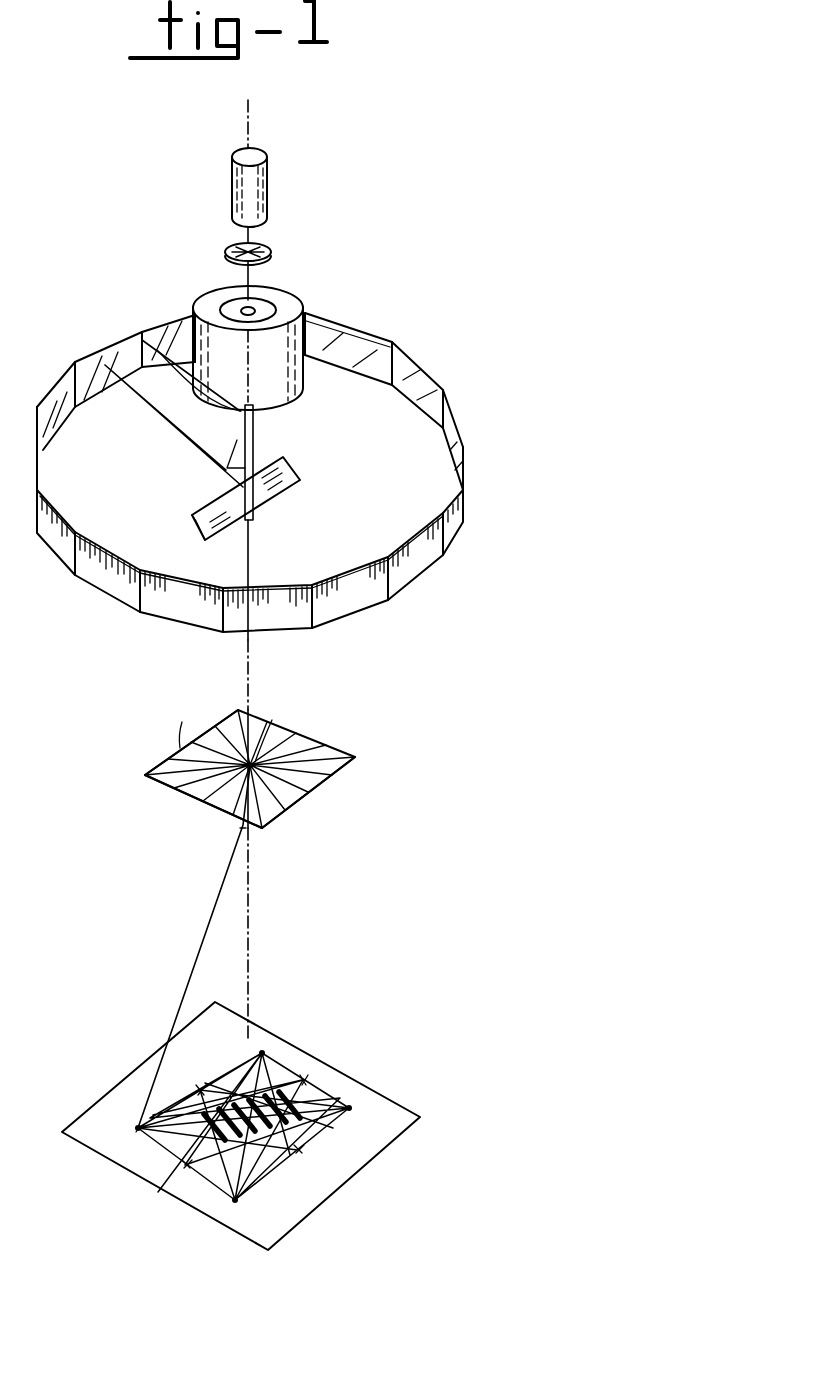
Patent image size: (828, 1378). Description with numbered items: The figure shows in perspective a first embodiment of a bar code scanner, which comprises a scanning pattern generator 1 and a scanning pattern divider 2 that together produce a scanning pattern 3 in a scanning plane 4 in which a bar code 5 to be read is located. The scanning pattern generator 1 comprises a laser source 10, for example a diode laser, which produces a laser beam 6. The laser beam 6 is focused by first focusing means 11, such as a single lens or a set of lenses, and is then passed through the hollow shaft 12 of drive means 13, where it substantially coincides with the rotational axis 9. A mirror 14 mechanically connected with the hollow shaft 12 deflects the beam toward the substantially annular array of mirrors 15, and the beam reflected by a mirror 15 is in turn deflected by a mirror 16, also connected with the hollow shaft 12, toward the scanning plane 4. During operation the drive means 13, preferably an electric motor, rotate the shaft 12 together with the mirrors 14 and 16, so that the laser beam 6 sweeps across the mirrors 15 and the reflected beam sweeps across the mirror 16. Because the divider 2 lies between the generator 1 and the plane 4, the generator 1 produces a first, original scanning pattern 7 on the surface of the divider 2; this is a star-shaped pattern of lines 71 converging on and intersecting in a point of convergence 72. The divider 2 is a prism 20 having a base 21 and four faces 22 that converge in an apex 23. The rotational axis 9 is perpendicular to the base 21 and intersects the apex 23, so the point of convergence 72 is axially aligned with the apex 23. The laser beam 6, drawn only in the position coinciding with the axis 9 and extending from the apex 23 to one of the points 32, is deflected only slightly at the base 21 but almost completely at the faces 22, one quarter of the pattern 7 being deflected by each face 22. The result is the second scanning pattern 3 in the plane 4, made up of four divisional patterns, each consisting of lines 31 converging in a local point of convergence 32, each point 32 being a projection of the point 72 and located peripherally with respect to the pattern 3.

The scanning pattern generator 1 is at (282, 479).
The scanning pattern divider 2 is at (254, 764).
The scanning pattern 3 is at (265, 1141).
The scanning plane 4 is at (298, 1218).
The bar code 5 is at (160, 1190).
The laser beam 6 is at (244, 283).
The original scanning pattern 7 is at (290, 735).
The rotational axis 9 is at (262, 945).
The laser source 10 is at (262, 207).
The first focusing means 11 is at (268, 256).
The hollow shaft 12 is at (143, 333).
The drive means 13 is at (300, 341).
The mirror 14 is at (262, 428).
The annular array of mirrors 15 is at (150, 640).
The mirror 16 is at (300, 478).
The prism 20 is at (342, 772).
The base 21 is at (150, 772).
The faces 22 is at (283, 812).
The apex 23 is at (238, 840).
The scanning lines 31 is at (270, 1170).
The local points of convergence 32 is at (262, 1050).
The lines 71 is at (186, 752).
The point of convergence 72 is at (256, 762).